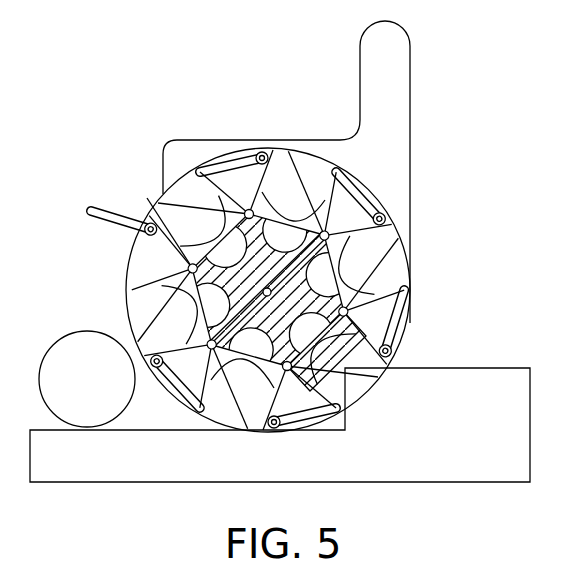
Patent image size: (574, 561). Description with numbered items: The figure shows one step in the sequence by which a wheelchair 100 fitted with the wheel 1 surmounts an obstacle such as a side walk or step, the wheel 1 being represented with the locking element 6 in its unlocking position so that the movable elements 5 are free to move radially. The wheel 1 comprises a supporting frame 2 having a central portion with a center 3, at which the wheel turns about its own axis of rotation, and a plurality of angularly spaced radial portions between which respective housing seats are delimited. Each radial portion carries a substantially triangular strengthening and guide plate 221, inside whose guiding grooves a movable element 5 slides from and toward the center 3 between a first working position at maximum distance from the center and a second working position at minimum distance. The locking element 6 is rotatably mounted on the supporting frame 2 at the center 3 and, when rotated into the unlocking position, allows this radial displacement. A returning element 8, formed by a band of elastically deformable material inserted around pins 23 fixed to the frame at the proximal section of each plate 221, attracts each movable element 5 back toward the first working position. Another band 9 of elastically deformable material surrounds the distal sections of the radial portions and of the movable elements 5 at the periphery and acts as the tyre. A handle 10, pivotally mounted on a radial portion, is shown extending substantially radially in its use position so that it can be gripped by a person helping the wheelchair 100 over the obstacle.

The wheel 1 is at (460, 295).
The supporting frame 2 is at (388, 239).
The center 3 is at (267, 292).
The movable element 5 is at (300, 193).
The locking element 6 is at (257, 288).
The returning element 8 is at (128, 309).
The band made of elastically deformable material 9 is at (372, 372).
The handle 10 is at (224, 163).
The pin 23 is at (160, 205).
The wheelchair 100 is at (452, 107).
The strengthening and guide plate 221 is at (257, 195).